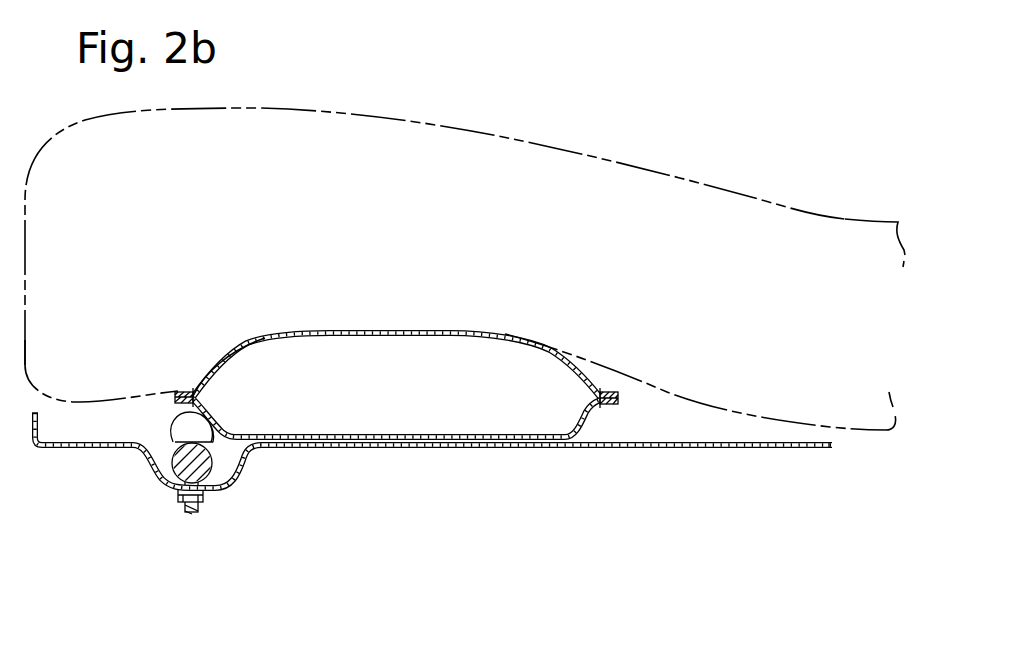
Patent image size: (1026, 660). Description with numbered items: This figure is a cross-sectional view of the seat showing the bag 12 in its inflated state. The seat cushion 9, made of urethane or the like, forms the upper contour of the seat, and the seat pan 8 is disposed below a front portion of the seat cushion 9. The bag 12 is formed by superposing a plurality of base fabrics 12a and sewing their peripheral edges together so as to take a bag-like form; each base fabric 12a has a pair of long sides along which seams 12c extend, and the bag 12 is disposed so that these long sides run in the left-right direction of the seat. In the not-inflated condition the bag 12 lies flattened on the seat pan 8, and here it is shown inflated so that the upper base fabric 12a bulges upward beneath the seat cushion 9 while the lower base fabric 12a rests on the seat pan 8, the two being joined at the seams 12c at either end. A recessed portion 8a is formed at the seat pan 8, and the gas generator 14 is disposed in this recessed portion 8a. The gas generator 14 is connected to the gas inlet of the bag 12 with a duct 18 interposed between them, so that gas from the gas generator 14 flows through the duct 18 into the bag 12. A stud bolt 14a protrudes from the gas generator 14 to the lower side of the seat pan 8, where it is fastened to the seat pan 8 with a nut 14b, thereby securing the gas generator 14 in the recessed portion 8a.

The seat cushion 9 is at (712, 190).
The bag 12 is at (400, 369).
The base fabric 12a is at (336, 337).
The seam 12c is at (182, 392).
The seat pan 8 is at (432, 506).
The recessed portion 8a is at (222, 468).
The gas generator 14 is at (194, 515).
The stud bolt 14a is at (193, 513).
The nut 14b is at (208, 496).
The duct 18 is at (178, 441).